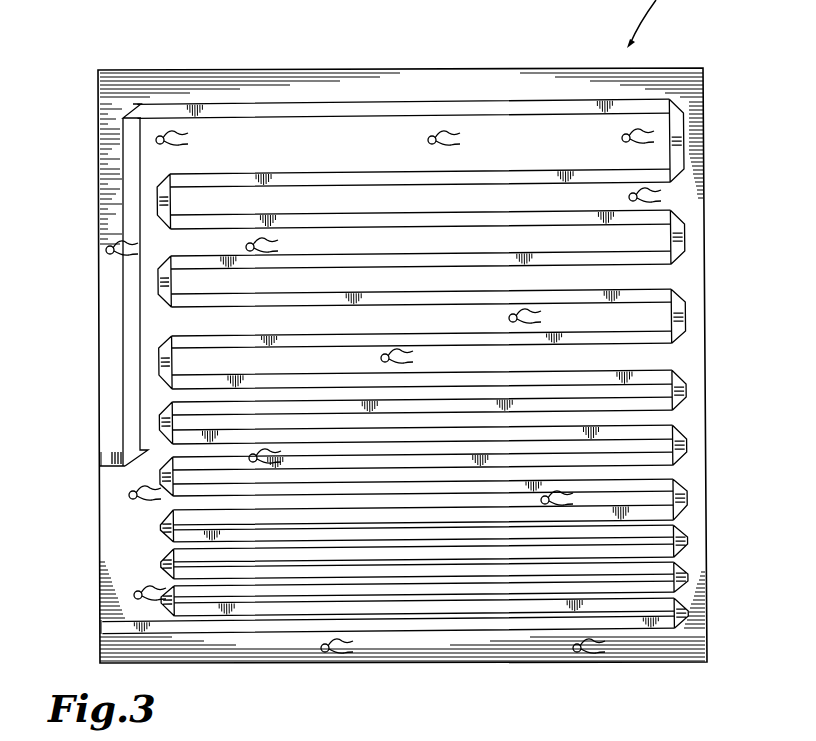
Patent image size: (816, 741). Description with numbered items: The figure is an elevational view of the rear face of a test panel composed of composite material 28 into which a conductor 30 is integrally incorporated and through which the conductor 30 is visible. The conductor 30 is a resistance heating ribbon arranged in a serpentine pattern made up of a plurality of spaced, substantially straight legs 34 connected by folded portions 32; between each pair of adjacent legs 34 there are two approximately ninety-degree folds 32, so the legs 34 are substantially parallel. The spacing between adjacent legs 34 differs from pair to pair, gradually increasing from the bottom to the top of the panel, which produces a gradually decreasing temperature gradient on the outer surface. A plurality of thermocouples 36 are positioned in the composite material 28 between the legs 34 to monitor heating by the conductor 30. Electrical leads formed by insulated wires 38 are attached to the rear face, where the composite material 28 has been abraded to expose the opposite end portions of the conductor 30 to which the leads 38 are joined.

The composite material 28 is at (105, 94).
The conductor 30 is at (430, 361).
The folded portions 32 is at (687, 107).
The legs 34 is at (470, 103).
The thermocouples 36 is at (156, 142).
The electrical leads 38 is at (86, 405).